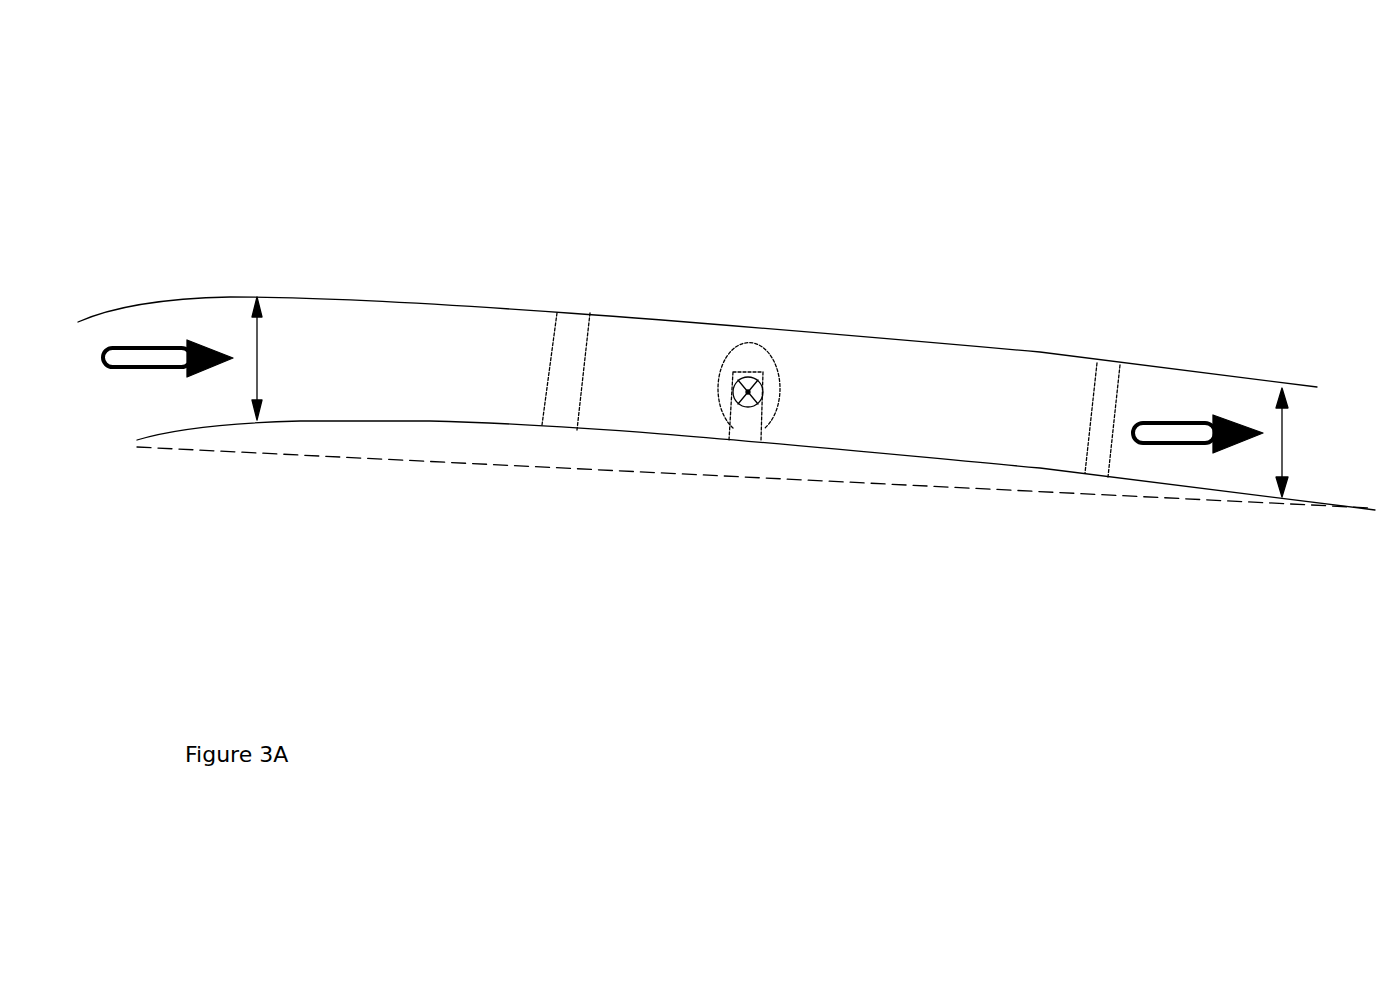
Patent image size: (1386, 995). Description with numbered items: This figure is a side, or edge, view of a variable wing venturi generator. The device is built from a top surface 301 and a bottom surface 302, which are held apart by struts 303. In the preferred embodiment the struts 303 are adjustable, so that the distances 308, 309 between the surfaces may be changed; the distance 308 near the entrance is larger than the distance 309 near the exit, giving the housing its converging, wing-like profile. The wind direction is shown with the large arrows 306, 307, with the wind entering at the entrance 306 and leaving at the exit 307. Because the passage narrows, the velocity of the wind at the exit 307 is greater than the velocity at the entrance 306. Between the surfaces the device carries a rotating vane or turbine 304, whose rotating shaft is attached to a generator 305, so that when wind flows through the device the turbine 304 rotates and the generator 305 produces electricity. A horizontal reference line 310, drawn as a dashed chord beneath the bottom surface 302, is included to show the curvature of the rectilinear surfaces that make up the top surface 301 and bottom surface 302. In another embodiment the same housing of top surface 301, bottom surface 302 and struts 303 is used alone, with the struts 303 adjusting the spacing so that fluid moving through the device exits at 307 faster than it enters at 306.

The top surface 301 is at (211, 282).
The bottom surface 302 is at (400, 440).
The struts 303 is at (1092, 455).
The rotating vane or turbine 304 is at (790, 364).
The generator 305 is at (733, 400).
The entrance wind direction arrow 306 is at (138, 340).
The exit wind direction arrow 307 is at (1190, 412).
The entrance distance between surfaces 308 is at (280, 368).
The exit distance between surfaces 309 is at (1300, 440).
The horizontal reference line 310 is at (1086, 515).